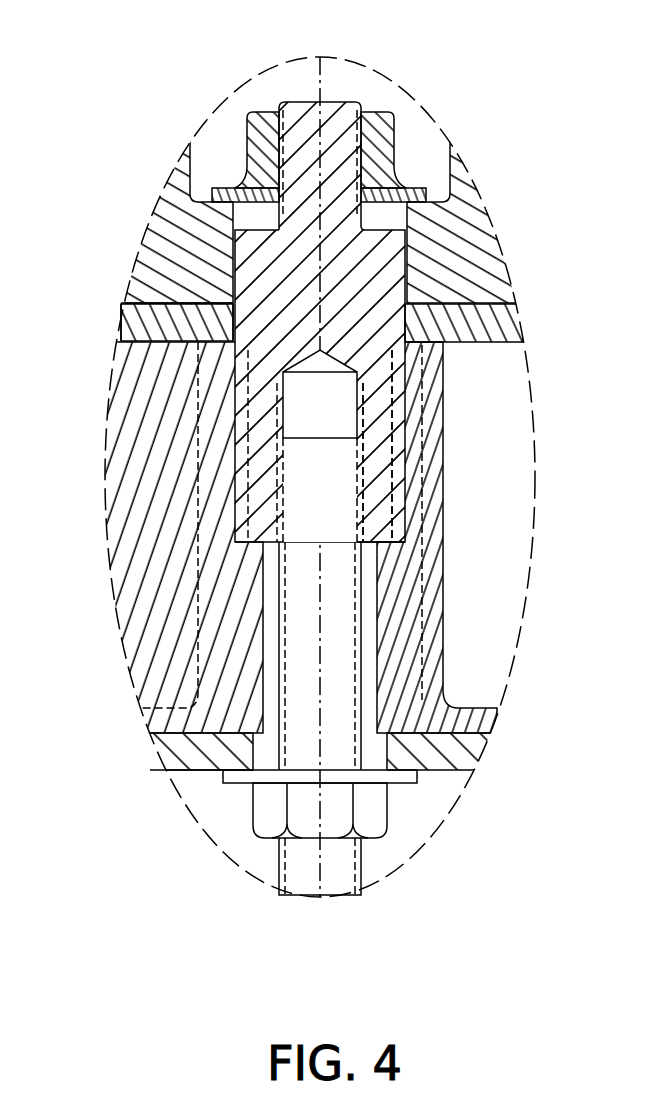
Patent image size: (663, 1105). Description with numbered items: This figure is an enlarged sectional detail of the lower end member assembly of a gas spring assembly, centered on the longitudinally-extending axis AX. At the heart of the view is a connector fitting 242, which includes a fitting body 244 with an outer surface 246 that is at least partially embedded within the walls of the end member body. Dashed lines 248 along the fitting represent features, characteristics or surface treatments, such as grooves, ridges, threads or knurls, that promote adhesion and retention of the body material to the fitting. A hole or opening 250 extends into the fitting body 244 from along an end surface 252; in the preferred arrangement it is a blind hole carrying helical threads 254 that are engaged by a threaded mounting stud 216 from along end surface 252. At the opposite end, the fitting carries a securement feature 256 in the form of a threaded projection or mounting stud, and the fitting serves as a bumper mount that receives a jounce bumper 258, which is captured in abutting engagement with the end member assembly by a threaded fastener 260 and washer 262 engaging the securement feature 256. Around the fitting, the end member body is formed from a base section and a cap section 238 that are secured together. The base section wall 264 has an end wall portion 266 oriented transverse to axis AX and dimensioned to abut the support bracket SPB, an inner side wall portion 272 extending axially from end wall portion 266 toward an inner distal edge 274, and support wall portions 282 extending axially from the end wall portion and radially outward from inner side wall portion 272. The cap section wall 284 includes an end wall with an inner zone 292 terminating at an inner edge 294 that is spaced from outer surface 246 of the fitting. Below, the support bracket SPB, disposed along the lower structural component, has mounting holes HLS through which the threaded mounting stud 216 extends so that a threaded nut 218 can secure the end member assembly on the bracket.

The threaded mounting stud 216 is at (343, 875).
The threaded nut 218 is at (268, 828).
The cap section 238 is at (122, 317).
The connector fitting 242 is at (383, 227).
The fitting body 244 is at (383, 282).
The outer surface 246 is at (408, 325).
The dashed lines 248 is at (393, 452).
The hole or opening 250 is at (299, 418).
The end surface 252 is at (382, 548).
The helical threads 254 is at (362, 513).
The securement feature 256 is at (360, 142).
The jounce bumper 258 is at (167, 257).
The threaded fastener 260 is at (263, 118).
The washer 262 is at (212, 202).
The base section wall 264 is at (151, 723).
The end wall portion 266 is at (477, 727).
The inner side wall portion 272 is at (417, 468).
The inner distal edge 274 is at (410, 345).
The support wall portions 282 is at (127, 575).
The cap section wall 284 is at (140, 327).
The inner zone 292 is at (170, 308).
The inner edge 294 is at (220, 328).
The longitudinally-extending axis AX is at (318, 877).
The support bracket SPB is at (185, 752).
The mounting holes HLS is at (242, 750).